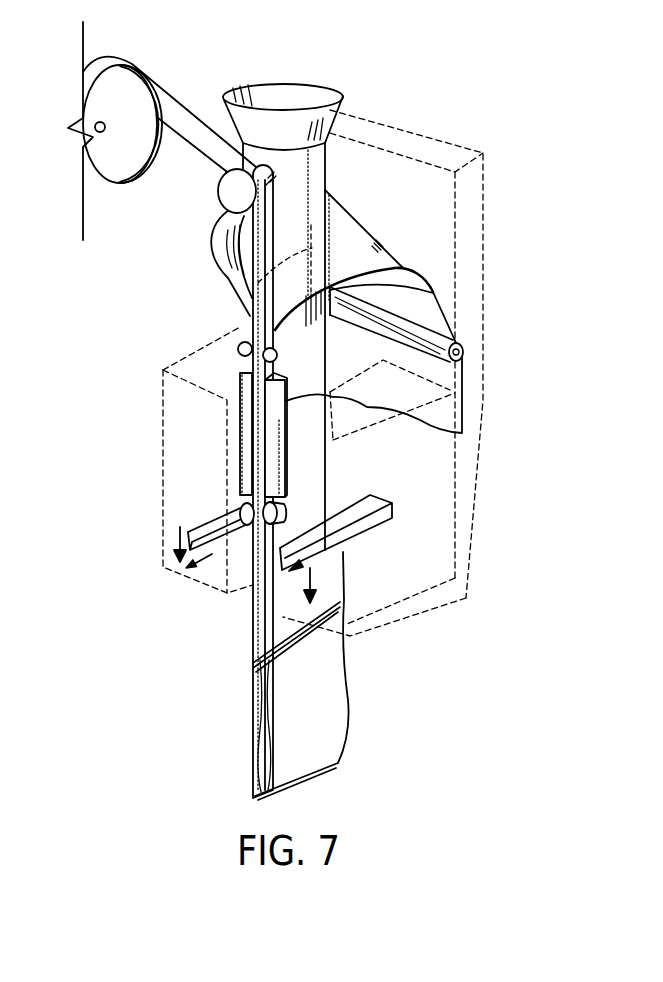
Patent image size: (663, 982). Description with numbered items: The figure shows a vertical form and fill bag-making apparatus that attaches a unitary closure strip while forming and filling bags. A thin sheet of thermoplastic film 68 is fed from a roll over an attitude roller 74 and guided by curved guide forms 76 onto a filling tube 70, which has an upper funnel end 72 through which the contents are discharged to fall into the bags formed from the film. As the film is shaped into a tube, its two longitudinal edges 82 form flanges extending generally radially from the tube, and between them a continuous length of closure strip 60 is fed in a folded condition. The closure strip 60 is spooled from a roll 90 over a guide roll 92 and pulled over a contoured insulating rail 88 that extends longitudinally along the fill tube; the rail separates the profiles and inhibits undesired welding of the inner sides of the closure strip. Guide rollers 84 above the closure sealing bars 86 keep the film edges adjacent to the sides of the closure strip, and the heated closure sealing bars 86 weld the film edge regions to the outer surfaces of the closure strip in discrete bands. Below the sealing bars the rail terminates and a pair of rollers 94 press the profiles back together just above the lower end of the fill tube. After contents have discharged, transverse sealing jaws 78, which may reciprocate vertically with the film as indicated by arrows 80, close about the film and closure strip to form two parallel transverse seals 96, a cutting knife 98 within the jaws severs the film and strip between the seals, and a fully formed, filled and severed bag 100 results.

The closure strip 60 is at (268, 220).
The thermoplastic film 68 is at (370, 230).
The filling tube 70 is at (327, 158).
The upper funnel end 72 is at (297, 85).
The attitude roller 74 is at (467, 348).
The curved guide forms 76 is at (433, 284).
The transverse sealing jaws 78 is at (205, 517).
The arrows 80 is at (180, 536).
The longitudinal edges 82 is at (227, 267).
The guide rollers 84 is at (240, 345).
The closure sealing bars 86 is at (238, 396).
The insulating rail 88 is at (318, 248).
The roll 90 is at (143, 70).
The guide roll 92 is at (218, 188).
The rollers 94 is at (228, 505).
The transverse seals 96 is at (252, 661).
The cutting knife 98 is at (186, 566).
The bag 100 is at (350, 708).